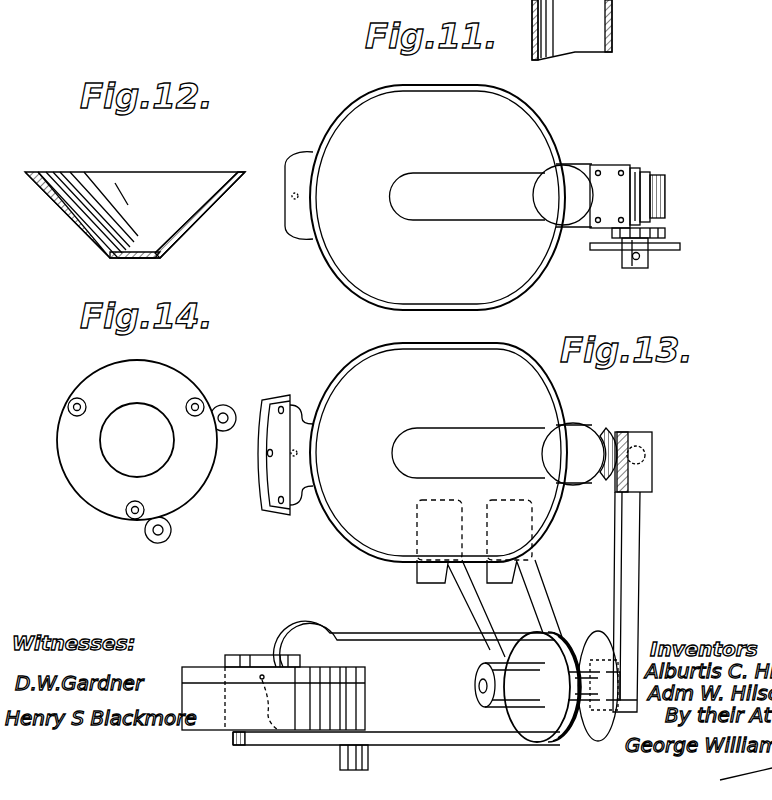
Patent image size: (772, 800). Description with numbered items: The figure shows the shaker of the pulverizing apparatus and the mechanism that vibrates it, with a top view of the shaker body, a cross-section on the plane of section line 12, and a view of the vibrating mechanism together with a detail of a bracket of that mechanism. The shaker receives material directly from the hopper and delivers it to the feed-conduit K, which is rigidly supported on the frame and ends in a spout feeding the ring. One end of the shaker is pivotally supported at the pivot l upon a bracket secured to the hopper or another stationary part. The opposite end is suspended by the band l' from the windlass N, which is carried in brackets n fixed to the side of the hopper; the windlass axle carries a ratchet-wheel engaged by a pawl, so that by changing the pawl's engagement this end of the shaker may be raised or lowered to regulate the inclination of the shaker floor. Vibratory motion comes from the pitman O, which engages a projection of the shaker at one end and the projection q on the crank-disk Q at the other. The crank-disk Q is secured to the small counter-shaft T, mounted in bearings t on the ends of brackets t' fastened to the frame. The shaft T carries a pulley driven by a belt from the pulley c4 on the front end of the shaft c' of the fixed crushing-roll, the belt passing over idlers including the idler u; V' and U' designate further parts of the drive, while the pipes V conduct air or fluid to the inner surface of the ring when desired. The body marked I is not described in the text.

In FIG. 11, the cylinder body I is at (438, 197).
In FIG. 12, the cylinder body I is at (135, 215).
In FIG. 13, the cylinder body I is at (425, 452).
In FIG. 11, the section line 12 12 is at (481, 85).
In FIG. 11, the pivot l is at (563, 195).
In FIG. 11, the band l' is at (657, 196).
In FIG. 13, the band l' is at (586, 435).
In FIG. 11, the windlass N is at (642, 196).
In FIG. 11, the brackets n is at (678, 180).
In FIG. 11, the axle of the windlass n' is at (649, 183).
In FIG. 11, the feed-conduit K is at (613, 20).
In FIG. 14, the idler U' is at (146, 451).
In FIG. 13, the pitman O is at (635, 602).
In FIG. 13, the crank-disk Q is at (593, 675).
In FIG. 13, the projection on the crank-disk q is at (624, 712).
In FIG. 13, the bearings t is at (507, 682).
In FIG. 13, the brackets t' is at (489, 608).
In FIG. 13, the counter-shaft T is at (480, 690).
In FIG. 13, the pipes V is at (415, 616).
In FIG. 13, the box V' is at (292, 697).
In FIG. 13, the idler u is at (396, 751).
In FIG. 13, the shaft of the fixed crushing-roll c' is at (262, 640).
In FIG. 13, the pulley c4 is at (263, 746).